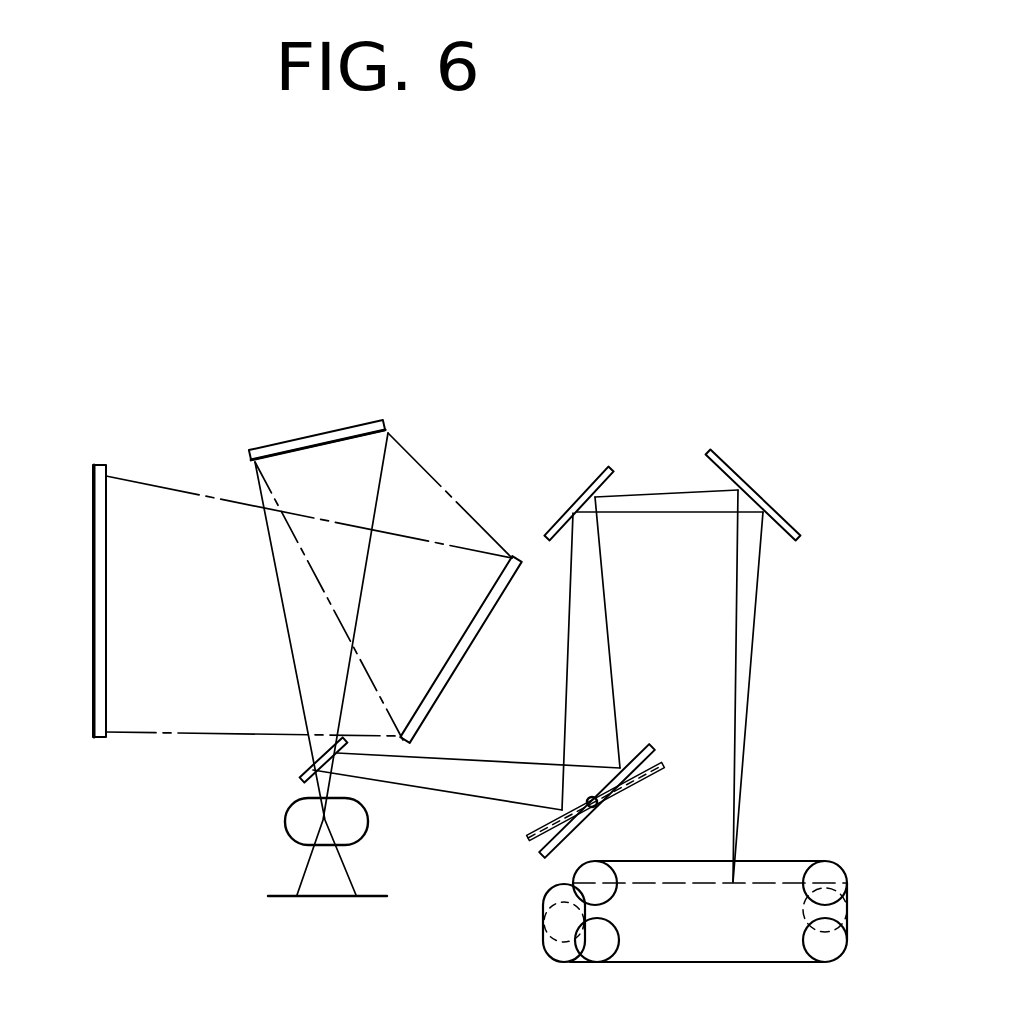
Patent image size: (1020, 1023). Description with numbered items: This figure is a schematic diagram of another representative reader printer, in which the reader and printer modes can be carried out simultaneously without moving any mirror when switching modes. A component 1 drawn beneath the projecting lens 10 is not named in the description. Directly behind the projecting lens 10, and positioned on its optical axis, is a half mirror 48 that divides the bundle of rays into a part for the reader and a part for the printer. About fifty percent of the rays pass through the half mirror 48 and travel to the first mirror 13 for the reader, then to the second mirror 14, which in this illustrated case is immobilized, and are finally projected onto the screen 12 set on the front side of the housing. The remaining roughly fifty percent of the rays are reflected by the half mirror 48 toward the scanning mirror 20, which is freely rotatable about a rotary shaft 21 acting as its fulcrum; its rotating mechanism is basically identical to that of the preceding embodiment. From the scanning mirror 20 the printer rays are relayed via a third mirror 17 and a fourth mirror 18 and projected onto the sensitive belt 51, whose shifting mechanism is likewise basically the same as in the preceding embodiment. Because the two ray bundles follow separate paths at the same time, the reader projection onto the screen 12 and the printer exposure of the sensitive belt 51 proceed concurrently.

The original document 1 is at (380, 896).
The projecting lens 10 is at (285, 822).
The screen 12 is at (106, 618).
The first mirror 13 is at (322, 447).
The second mirror 14 is at (463, 638).
The third mirror 17 is at (615, 478).
The fourth mirror 18 is at (710, 467).
The scanning mirror 20 is at (647, 744).
The rotary shaft 21 is at (600, 807).
The half mirror 48 is at (306, 777).
The sensitive belt 51 is at (787, 861).